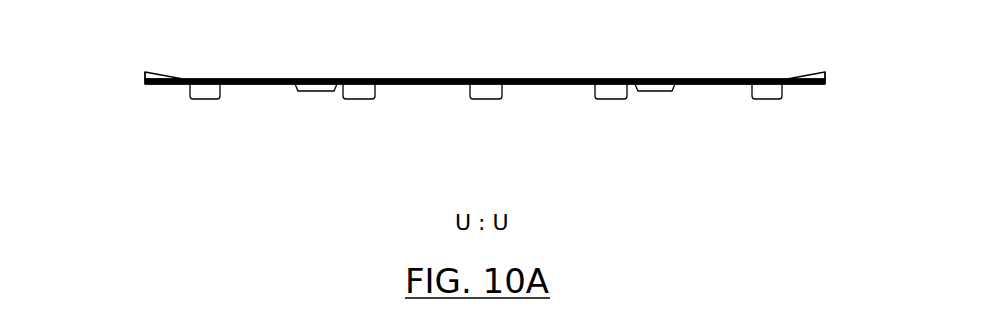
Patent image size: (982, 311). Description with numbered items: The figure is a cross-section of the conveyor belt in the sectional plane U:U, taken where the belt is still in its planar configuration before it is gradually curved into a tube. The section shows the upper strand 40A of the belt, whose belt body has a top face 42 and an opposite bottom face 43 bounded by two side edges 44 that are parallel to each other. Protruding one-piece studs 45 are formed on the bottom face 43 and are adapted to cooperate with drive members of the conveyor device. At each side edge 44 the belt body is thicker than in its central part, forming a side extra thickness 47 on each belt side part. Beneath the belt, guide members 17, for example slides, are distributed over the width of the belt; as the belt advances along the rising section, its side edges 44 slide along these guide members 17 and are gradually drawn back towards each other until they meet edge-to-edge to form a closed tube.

The upper strand 40A is at (465, 88).
The top face 42 is at (258, 76).
The bottom face 43 is at (253, 92).
The side edges 44 is at (138, 75).
The studs 45 is at (310, 93).
The side extra thickness 47 is at (158, 75).
The guide members 17 is at (202, 95).